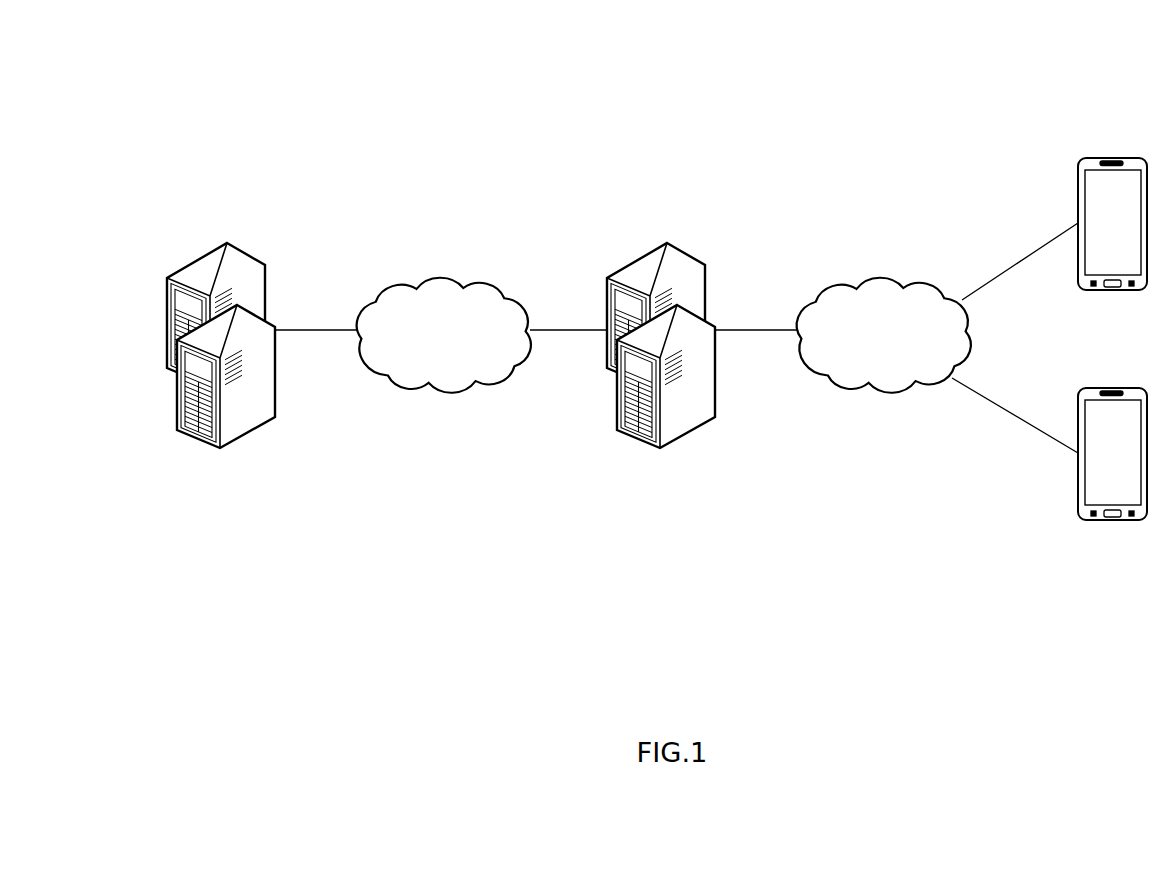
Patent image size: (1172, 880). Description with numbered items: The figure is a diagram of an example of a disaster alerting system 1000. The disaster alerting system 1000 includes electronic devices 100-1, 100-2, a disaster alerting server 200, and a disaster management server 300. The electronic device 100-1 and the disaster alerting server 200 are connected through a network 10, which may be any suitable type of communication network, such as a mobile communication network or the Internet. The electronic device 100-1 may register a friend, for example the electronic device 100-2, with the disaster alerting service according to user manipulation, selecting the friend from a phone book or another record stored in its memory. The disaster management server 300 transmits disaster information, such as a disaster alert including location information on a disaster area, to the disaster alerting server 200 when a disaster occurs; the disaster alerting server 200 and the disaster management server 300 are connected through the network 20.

The disaster alerting system 1000 is at (745, 61).
The disaster management server 300 is at (227, 243).
The network 20 is at (448, 277).
The disaster alerting server 200 is at (667, 243).
The network 10 is at (890, 277).
The electronic device 100-1 is at (1110, 158).
The electronic device 100-2 is at (1110, 388).